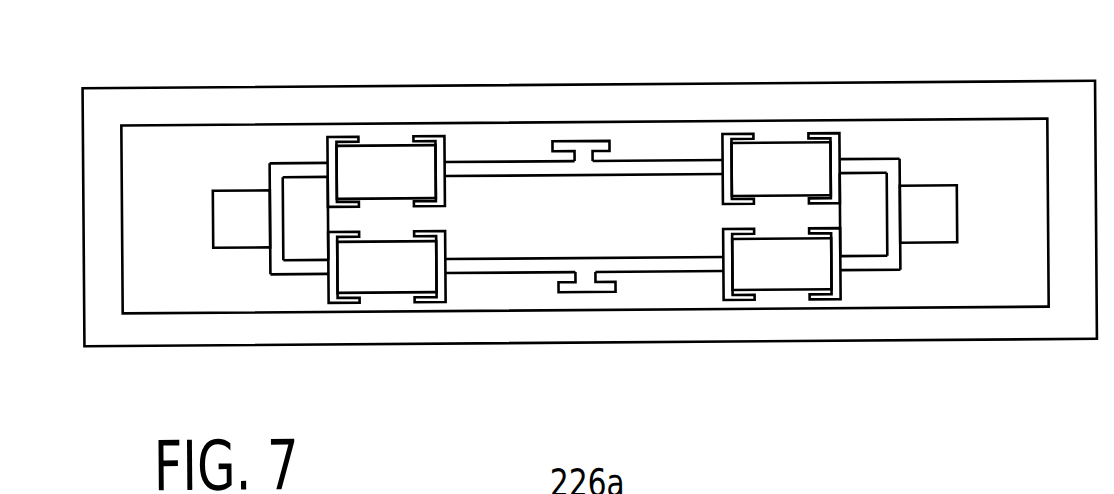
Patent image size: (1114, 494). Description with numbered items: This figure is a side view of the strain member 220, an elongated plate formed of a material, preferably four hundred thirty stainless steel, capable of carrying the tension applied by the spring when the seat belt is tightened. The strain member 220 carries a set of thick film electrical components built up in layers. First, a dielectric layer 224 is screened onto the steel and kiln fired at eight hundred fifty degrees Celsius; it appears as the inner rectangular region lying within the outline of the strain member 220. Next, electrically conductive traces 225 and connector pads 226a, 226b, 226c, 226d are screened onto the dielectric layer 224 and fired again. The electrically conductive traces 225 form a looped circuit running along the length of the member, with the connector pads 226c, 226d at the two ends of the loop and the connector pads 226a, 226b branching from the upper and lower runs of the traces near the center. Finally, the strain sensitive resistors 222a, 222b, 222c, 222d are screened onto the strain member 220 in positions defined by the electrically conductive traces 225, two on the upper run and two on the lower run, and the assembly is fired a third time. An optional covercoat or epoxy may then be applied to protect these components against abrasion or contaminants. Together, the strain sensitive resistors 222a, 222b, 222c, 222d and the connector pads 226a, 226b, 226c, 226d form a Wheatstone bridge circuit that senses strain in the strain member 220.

The strain member 220 is at (81, 80).
The strain sensitive resistor 222a is at (388, 146).
The strain sensitive resistor 222b is at (385, 288).
The strain sensitive resistor 222c is at (781, 291).
The strain sensitive resistor 222d is at (778, 149).
The dielectric layer 224 is at (177, 295).
The electrically conductive traces 225 is at (503, 161).
The connector pad 226a is at (587, 141).
The connector pad 226b is at (582, 292).
The connector pad 226c is at (933, 209).
The connector pad 226d is at (243, 215).